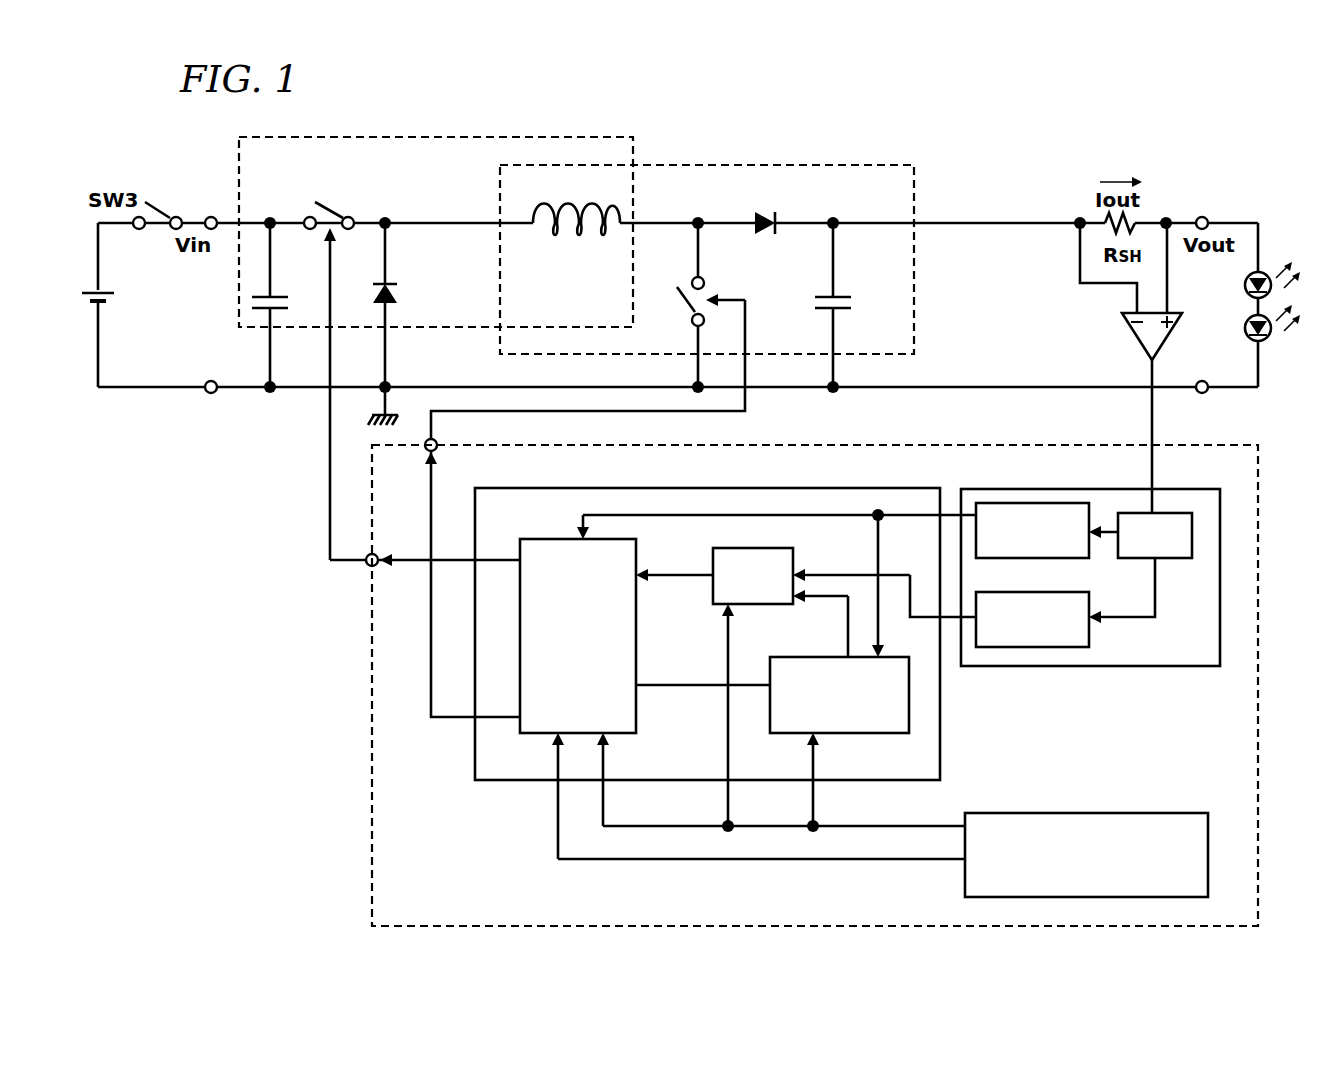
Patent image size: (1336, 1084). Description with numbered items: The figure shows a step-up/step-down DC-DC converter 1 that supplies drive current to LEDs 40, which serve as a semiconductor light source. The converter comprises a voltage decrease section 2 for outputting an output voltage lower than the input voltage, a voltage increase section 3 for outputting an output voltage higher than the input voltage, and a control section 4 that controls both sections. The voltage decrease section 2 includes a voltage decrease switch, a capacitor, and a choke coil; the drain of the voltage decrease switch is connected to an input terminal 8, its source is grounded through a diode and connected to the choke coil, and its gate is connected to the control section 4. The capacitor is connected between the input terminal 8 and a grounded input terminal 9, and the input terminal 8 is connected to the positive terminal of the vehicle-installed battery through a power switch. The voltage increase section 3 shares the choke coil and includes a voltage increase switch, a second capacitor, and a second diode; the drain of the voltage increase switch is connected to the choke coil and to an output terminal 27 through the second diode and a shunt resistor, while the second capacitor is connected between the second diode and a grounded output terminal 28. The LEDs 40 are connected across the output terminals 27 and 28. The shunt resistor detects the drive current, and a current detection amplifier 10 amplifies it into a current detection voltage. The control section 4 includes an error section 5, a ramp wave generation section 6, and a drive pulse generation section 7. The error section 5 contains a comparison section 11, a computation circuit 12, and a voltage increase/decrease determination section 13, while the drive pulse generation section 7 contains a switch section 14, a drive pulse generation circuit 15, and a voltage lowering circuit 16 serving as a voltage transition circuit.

The step-up/step-down DC-DC converter 1 is at (1212, 180).
The voltage decrease section 2 is at (428, 137).
The voltage increase section 3 is at (750, 165).
The control section 4 is at (1236, 447).
The error section 5 is at (1220, 533).
The ramp wave generation section 6 is at (1208, 852).
The drive pulse generation section 7 is at (890, 488).
The input terminal 8 is at (211, 217).
The input terminal 9 is at (211, 381).
The current detection amplifier 10 is at (1135, 336).
The comparison section 11 is at (1177, 513).
The computation circuit 12 is at (1047, 503).
The voltage increase/decrease determination section 13 is at (1030, 647).
The switch section 14 is at (763, 548).
The drive pulse generation circuit 15 is at (553, 539).
The voltage lowering circuit 16 is at (880, 733).
The output terminal 27 is at (1202, 217).
The output terminal 28 is at (1202, 381).
The LEDs 40 is at (1266, 274).